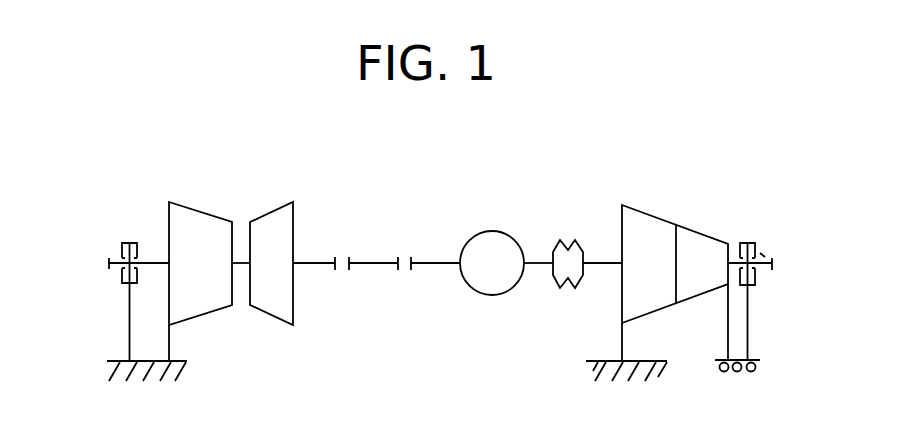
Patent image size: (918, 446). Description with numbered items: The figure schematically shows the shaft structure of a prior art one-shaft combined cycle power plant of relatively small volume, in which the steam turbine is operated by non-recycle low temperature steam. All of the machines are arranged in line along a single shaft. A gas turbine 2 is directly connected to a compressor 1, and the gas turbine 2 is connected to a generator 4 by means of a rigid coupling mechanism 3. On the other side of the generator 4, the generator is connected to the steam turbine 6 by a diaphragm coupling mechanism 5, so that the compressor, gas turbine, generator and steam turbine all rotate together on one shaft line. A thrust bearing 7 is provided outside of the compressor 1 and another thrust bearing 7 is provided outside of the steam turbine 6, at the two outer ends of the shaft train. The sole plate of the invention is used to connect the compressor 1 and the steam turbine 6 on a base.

The compressor 1 is at (200, 212).
The gas turbine 2 is at (293, 202).
The rigid coupling mechanism 3 is at (343, 255).
The generator 4 is at (494, 231).
The diaphragm coupling mechanism 5 is at (569, 242).
The steam turbine 6 is at (680, 214).
The thrust bearing 7 is at (131, 242).